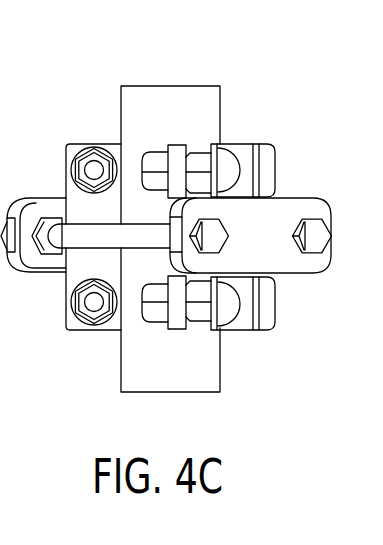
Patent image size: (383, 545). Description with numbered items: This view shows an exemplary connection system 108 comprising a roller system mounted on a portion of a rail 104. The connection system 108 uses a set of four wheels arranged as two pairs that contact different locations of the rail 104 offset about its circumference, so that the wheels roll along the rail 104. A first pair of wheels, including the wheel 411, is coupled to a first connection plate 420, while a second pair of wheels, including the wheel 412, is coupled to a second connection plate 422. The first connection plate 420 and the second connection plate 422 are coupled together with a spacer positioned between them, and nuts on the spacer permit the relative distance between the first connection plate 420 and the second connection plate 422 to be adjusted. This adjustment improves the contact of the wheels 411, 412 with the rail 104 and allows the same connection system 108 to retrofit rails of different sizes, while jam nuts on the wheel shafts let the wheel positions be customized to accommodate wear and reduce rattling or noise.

The rail 104 is at (170, 93).
The connection system 108 is at (290, 123).
The wheel 411 is at (80, 150).
The wheel 412 is at (177, 150).
The first connection plate 420 is at (50, 208).
The second connection plate 422 is at (287, 213).